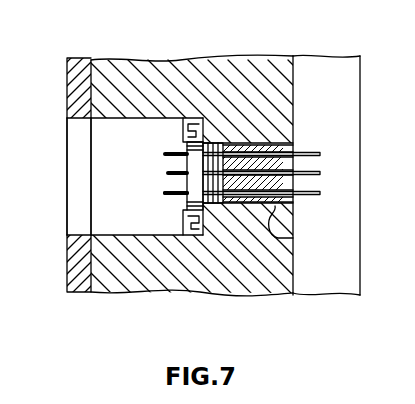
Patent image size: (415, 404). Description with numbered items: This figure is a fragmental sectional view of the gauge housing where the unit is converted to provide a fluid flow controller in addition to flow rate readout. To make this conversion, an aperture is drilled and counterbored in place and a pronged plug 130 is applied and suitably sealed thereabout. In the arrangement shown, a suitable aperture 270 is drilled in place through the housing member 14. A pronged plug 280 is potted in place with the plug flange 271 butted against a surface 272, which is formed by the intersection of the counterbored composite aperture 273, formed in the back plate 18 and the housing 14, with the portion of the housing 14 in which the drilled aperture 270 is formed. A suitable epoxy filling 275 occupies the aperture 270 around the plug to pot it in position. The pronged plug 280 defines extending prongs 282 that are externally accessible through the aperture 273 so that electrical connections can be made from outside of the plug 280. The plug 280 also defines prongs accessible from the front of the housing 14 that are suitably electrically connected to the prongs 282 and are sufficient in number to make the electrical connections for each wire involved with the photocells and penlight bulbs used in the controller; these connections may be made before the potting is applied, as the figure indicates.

The housing member 14 is at (265, 78).
The back plate 18 is at (66, 80).
The pronged plug 130 is at (175, 204).
The aperture 270 is at (293, 128).
The plug flange 271 is at (200, 124).
The surface 272 is at (206, 142).
The counterbored composite aperture 273 is at (80, 148).
The epoxy filling 275 is at (293, 238).
The pronged plug 280 is at (178, 180).
The prongs 282 is at (186, 173).